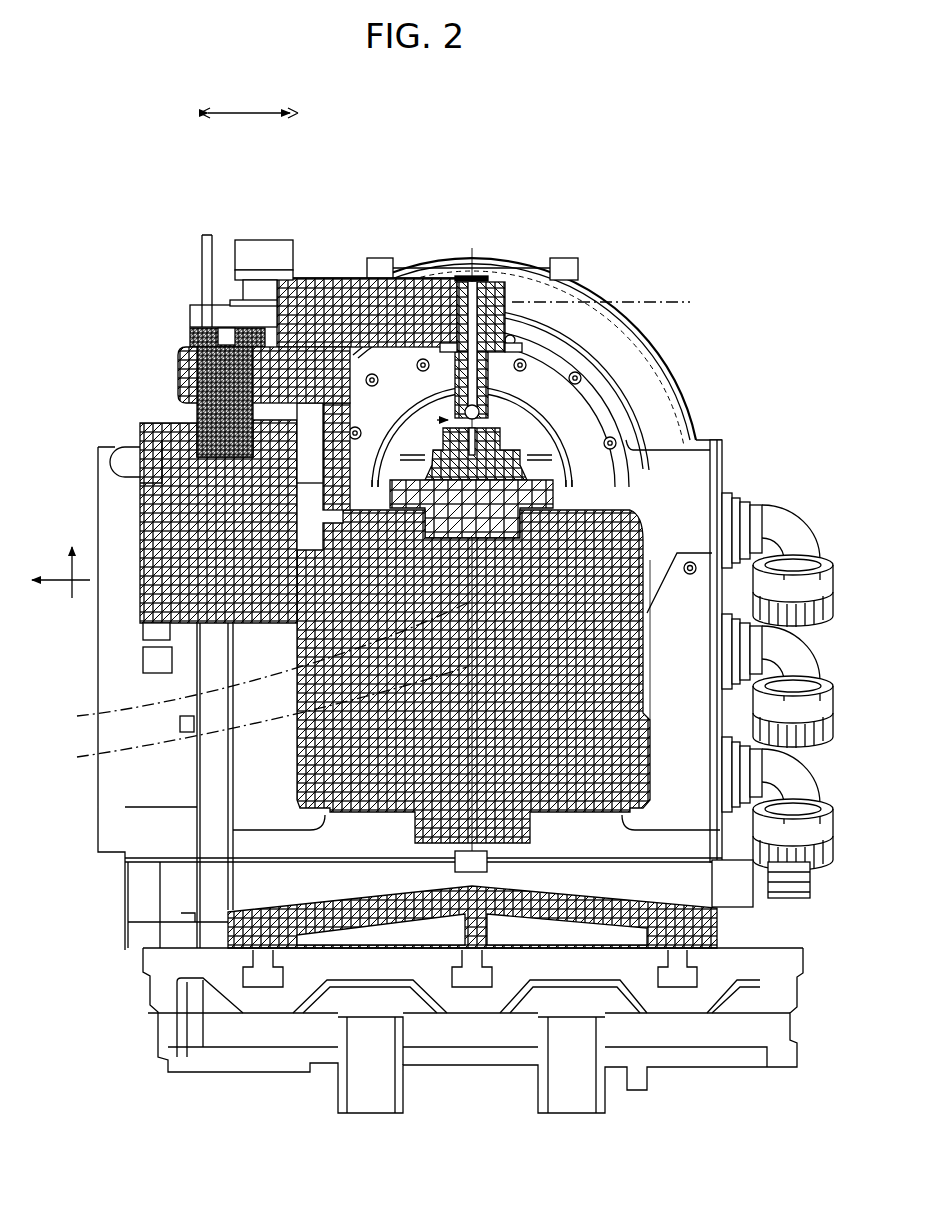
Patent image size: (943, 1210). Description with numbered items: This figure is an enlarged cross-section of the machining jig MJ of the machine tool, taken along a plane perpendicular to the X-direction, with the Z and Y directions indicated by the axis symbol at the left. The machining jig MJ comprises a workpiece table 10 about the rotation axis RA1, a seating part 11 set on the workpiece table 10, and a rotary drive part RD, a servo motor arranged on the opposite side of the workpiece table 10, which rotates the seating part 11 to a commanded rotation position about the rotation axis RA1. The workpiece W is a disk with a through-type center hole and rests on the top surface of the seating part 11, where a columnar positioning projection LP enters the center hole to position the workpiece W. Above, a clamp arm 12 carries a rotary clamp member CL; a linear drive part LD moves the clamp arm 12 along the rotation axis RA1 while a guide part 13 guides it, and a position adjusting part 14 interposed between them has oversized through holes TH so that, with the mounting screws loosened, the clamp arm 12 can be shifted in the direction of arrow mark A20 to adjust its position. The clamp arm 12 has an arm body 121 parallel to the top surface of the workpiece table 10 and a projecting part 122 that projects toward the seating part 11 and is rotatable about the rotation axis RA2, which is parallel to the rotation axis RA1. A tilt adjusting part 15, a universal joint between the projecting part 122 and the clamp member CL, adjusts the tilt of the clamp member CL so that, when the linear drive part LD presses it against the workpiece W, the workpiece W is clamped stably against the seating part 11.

The workpiece table 10 is at (560, 497).
The seating part 11 is at (560, 478).
The clamp arm 12 is at (517, 287).
The guide part 13 is at (327, 275).
The position adjusting part 14 is at (295, 323).
The tilt adjusting part 15 is at (446, 420).
The arm body 121 is at (390, 307).
The projecting part 122 is at (600, 337).
The through holes TH is at (300, 275).
The linear drive part LD is at (223, 388).
The machining jig MJ is at (113, 266).
The clamp member CL is at (610, 368).
The workpiece W is at (637, 373).
The positioning projection LP is at (627, 417).
The rotation axis RA1 is at (251, 664).
The rotation axis RA2 is at (633, 303).
The rotary drive part RD is at (256, 716).
The arrow mark A20 is at (249, 103).
The Z axis Z is at (72, 554).
The Y axis Y is at (49, 581).